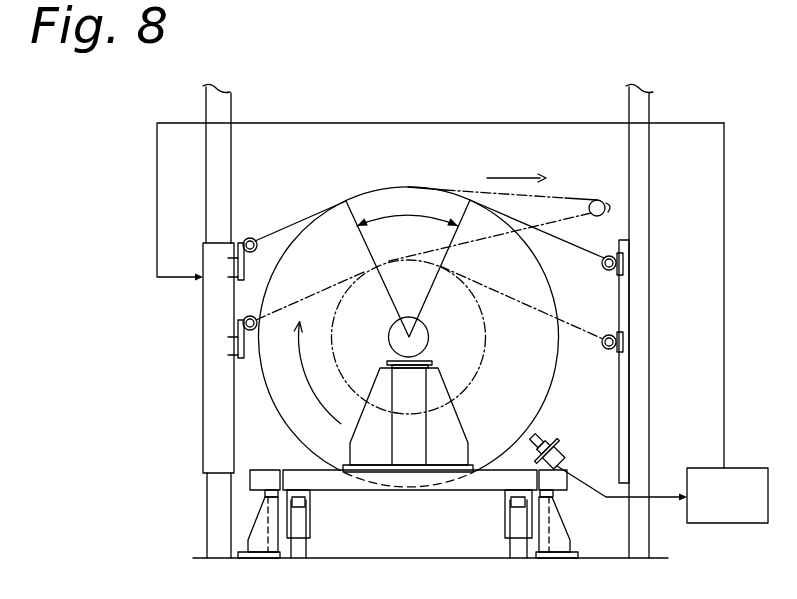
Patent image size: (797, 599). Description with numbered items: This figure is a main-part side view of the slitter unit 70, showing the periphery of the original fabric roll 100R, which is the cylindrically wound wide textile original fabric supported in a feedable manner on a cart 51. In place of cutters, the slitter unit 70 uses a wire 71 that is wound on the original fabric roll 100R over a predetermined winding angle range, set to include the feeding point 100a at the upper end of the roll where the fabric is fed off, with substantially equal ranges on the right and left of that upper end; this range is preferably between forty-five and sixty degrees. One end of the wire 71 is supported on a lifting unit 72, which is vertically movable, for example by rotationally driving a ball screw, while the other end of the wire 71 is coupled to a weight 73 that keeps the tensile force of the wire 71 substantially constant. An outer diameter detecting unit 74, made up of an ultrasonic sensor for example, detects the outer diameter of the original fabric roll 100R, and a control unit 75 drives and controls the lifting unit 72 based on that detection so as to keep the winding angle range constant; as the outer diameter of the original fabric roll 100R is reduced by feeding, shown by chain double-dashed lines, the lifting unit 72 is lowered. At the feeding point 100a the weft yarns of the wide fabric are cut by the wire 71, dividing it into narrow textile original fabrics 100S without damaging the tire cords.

The slitter unit 70 is at (332, 98).
The wire 71 is at (568, 253).
The lifting unit 72 is at (203, 377).
The weight 73 is at (623, 268).
The outer diameter detecting unit 74 is at (565, 440).
The control unit 75 is at (741, 505).
The cart 51 is at (342, 490).
The feeding point 100a is at (420, 187).
The original fabric roll 100R is at (300, 262).
The narrow textile original fabric 100S is at (560, 197).